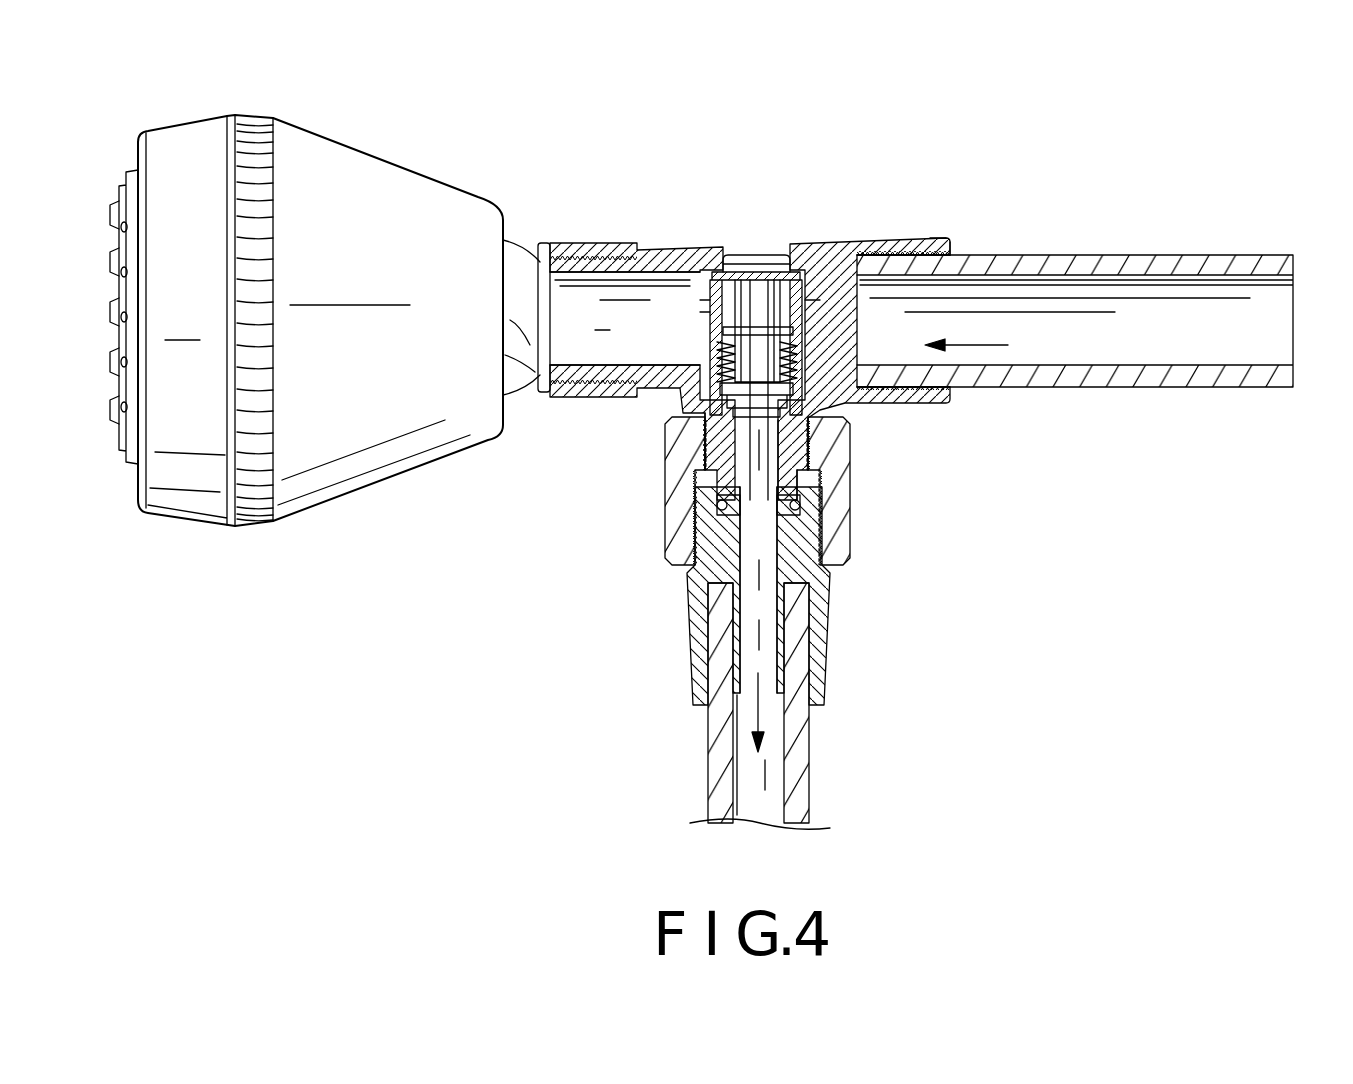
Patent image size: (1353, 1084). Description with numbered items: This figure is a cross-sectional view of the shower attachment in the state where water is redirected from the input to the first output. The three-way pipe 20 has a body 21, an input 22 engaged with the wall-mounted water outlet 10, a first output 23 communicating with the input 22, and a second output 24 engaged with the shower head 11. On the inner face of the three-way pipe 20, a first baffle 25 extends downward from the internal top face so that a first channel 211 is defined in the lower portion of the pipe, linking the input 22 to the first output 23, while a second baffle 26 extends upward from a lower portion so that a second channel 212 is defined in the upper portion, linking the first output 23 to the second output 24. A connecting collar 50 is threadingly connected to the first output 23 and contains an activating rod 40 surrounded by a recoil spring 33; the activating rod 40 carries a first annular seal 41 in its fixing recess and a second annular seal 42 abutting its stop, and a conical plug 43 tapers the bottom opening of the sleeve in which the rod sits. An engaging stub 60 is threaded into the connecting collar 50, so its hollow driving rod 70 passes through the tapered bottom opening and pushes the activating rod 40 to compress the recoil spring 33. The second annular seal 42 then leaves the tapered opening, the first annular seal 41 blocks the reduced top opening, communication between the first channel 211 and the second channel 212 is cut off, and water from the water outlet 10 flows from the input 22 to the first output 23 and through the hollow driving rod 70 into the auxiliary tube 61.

The water outlet 10 is at (1192, 256).
The shower head 11 is at (412, 183).
The three-way pipe 20 is at (791, 324).
The body 21 is at (935, 243).
The input 22 is at (950, 257).
The first output 23 is at (855, 430).
The second output 24 is at (607, 273).
The first baffle 25 is at (815, 298).
The second baffle 26 is at (712, 300).
The recoil spring 33 is at (803, 340).
The activating rod 40 is at (789, 313).
The first annular seal 41 is at (797, 335).
The second annular seal 42 is at (710, 428).
The conical plug 43 is at (805, 462).
The connecting collar 50 is at (848, 548).
The engaging stub 60 is at (825, 648).
The auxiliary tube 61 is at (808, 757).
The hollow driving rod 70 is at (700, 478).
The first channel 211 is at (858, 396).
The second channel 212 is at (710, 282).